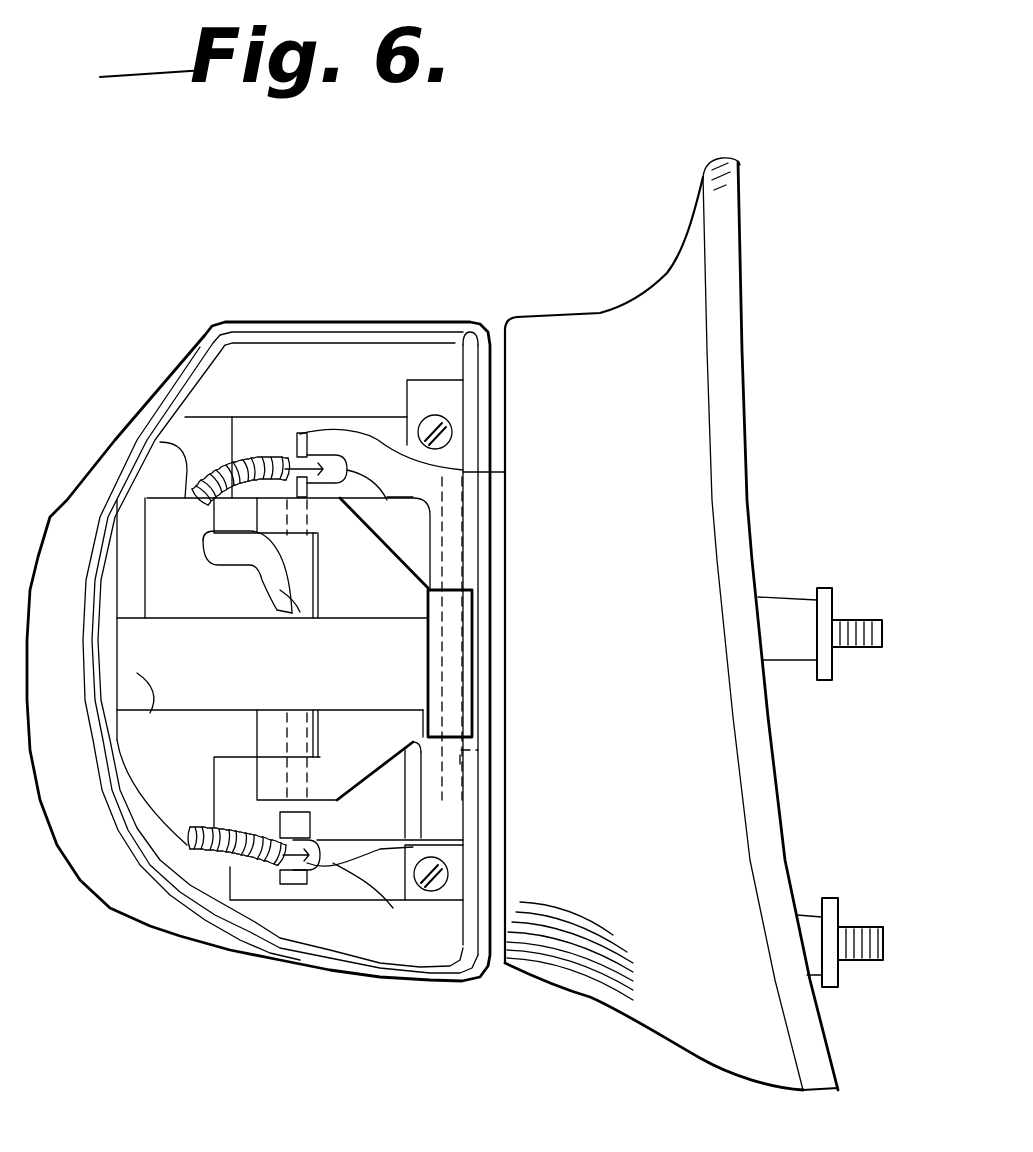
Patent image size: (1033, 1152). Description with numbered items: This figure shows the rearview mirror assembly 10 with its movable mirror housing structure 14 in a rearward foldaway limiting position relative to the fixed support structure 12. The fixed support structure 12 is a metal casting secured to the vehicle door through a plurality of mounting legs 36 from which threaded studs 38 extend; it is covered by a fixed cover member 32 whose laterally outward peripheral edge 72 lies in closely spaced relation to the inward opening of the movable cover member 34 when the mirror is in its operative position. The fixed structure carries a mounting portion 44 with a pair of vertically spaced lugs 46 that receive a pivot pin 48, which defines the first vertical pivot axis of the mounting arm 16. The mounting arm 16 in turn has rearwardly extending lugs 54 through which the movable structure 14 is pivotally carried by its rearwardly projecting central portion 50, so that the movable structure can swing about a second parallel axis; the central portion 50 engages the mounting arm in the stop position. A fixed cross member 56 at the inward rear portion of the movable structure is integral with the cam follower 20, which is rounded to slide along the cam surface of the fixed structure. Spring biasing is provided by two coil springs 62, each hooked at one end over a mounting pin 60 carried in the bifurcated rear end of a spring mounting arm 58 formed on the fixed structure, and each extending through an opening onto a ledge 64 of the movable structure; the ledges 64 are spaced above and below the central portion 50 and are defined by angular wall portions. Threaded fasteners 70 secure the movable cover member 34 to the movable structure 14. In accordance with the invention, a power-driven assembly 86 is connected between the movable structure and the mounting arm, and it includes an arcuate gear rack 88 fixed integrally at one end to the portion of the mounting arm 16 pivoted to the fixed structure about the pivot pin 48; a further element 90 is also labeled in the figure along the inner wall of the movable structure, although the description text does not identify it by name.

The rearview mirror assembly 10 is at (503, 212).
The fixed support structure 12 is at (516, 478).
The movable mirror housing structure 14 is at (200, 340).
The mounting arm 16 is at (363, 733).
The cam follower 20 is at (467, 935).
The fixed cover member 32 is at (694, 1068).
The movable cover member 34 is at (194, 958).
The mounting legs 36 is at (788, 653).
The threaded studs 38 is at (850, 617).
The mounting portion 44 is at (493, 648).
The lugs 46 is at (430, 538).
The pivot pin 48 is at (493, 737).
The central portion 50 is at (293, 567).
The lugs 54 is at (253, 513).
The cross member 56 is at (452, 390).
The spring mounting arms 58 is at (378, 480).
The mounting pin 60 is at (310, 455).
The coil springs 62 is at (247, 453).
The ledge 64 is at (227, 440).
The threaded fasteners 70 is at (452, 437).
The laterally outward peripheral edge 72 is at (500, 585).
The power-driven assembly 86 is at (200, 604).
The arcuate gear rack 88 is at (228, 685).
The seal lip 90 is at (140, 673).